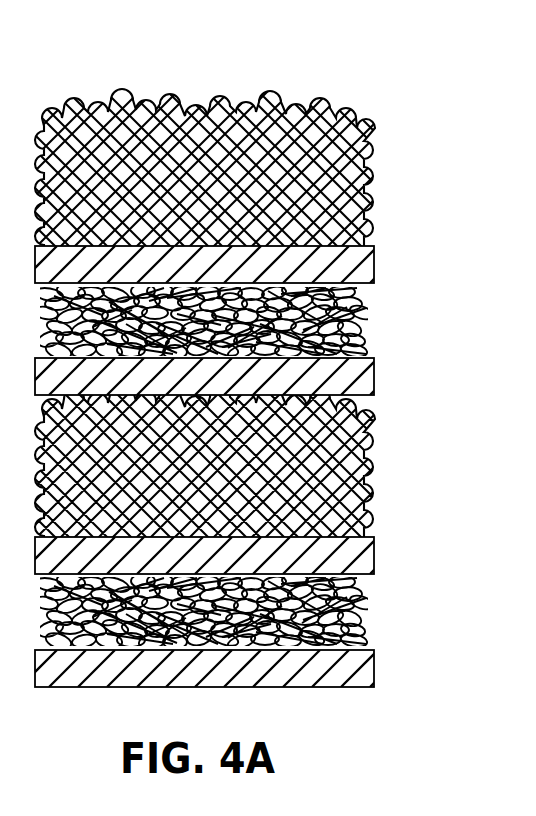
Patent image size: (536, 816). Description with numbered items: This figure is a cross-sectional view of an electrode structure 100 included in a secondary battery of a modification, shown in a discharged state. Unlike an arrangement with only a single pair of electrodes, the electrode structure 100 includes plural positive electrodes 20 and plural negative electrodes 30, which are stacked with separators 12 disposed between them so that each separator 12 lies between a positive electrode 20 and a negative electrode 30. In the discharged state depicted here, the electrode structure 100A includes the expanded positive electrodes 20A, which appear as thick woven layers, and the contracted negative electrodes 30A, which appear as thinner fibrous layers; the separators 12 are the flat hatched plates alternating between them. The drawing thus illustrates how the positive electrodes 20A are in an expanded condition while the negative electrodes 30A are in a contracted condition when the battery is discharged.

The electrode structure 100 is at (255, 355).
The electrode structure in a discharged state 100A is at (218, 102).
The positive electrode 20 is at (270, 315).
The expanded positive electrode 20A is at (370, 139).
The separator 12 is at (375, 263).
The negative electrode 30 is at (272, 466).
The contracted negative electrode 30A is at (368, 312).